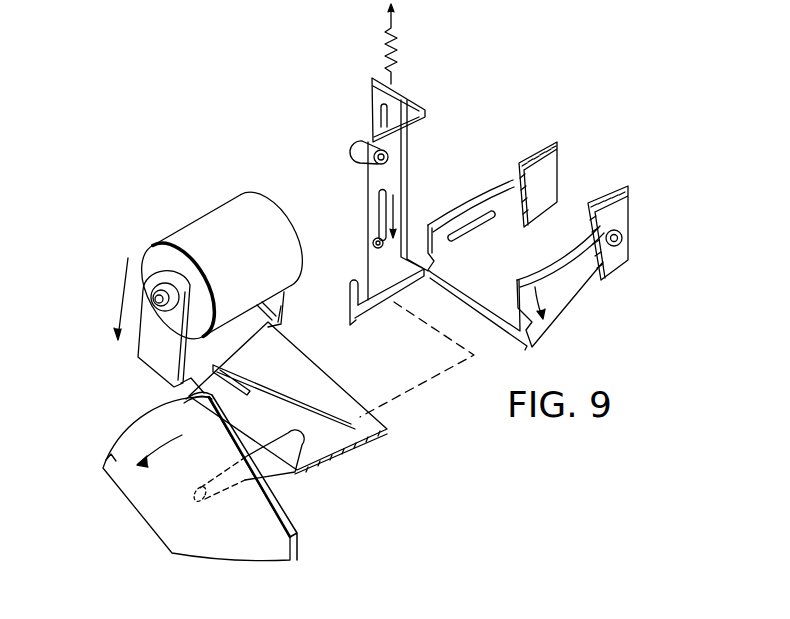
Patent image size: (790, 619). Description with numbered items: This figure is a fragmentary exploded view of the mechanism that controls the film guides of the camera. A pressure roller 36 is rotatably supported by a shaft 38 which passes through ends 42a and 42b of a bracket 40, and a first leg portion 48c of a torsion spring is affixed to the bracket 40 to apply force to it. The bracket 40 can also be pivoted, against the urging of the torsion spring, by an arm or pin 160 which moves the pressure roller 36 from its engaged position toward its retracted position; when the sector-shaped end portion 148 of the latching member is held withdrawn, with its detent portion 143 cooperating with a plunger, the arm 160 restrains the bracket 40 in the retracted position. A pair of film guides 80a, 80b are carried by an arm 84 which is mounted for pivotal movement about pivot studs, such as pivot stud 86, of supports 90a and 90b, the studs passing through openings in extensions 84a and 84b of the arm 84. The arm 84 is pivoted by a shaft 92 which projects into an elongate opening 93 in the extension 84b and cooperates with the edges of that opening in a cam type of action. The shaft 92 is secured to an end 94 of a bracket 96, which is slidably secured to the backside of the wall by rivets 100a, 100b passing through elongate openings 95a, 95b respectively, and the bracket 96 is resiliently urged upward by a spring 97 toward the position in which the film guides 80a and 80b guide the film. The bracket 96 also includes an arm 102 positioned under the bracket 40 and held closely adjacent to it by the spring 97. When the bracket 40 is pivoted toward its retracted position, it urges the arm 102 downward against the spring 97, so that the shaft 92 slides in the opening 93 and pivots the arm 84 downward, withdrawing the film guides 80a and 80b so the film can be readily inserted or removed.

The pressure roller 36 is at (202, 222).
The shaft 38 is at (156, 300).
The bracket 40 is at (326, 394).
The end of bracket 42a is at (150, 333).
The end of bracket 42b is at (281, 316).
The first leg portion 48c is at (297, 368).
The film guide 80a is at (546, 278).
The film guide 80b is at (450, 222).
The arm 84 is at (448, 337).
The extension of arm 84a is at (558, 303).
The extension of arm 84b is at (455, 265).
The pivot stud 86 is at (623, 238).
The support 90a is at (621, 209).
The support 90b is at (548, 172).
The shaft 92 is at (355, 150).
The elongate opening 93 is at (383, 161).
The end of bracket 94 is at (370, 135).
The elongate opening 95a is at (402, 110).
The elongate opening 95b is at (378, 207).
The bracket 96 is at (375, 97).
The spring 97 is at (398, 47).
The rivet 100a is at (388, 154).
The rivet 100b is at (374, 240).
The arm 102 is at (362, 287).
The detent portion 143 is at (190, 397).
The sector-shaped end portion 148 is at (108, 466).
The arm 160 is at (300, 458).